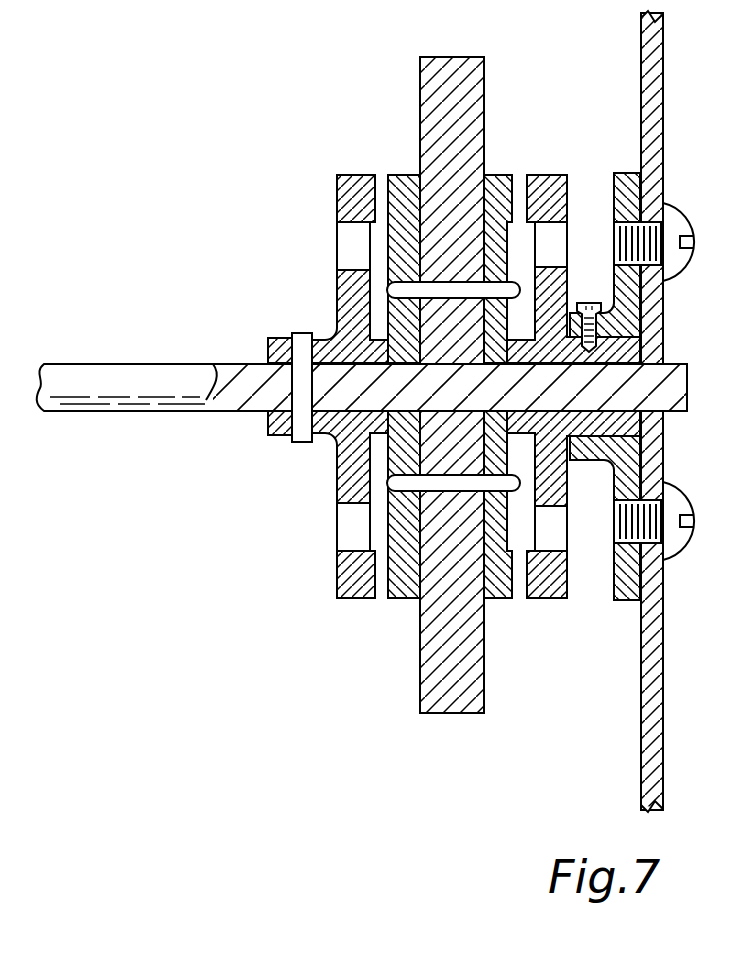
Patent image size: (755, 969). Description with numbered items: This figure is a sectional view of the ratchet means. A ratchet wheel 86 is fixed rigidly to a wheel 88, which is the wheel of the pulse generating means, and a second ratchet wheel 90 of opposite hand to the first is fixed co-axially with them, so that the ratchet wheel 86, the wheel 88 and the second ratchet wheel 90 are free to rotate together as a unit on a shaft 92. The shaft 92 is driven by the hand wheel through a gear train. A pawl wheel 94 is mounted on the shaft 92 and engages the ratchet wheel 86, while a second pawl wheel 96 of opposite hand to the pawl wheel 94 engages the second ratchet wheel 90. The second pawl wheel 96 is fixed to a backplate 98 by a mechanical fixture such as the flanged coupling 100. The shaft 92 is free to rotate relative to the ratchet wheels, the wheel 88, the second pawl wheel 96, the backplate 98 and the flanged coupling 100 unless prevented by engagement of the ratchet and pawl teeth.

The ratchet wheel 86 is at (406, 182).
The wheel 88 is at (491, 34).
The second ratchet wheel 90 is at (500, 184).
The shaft 92 is at (185, 448).
The pawl wheel 94 is at (346, 199).
The second pawl wheel 96 is at (574, 162).
The backplate 98 is at (692, 662).
The flanged coupling 100 is at (594, 645).